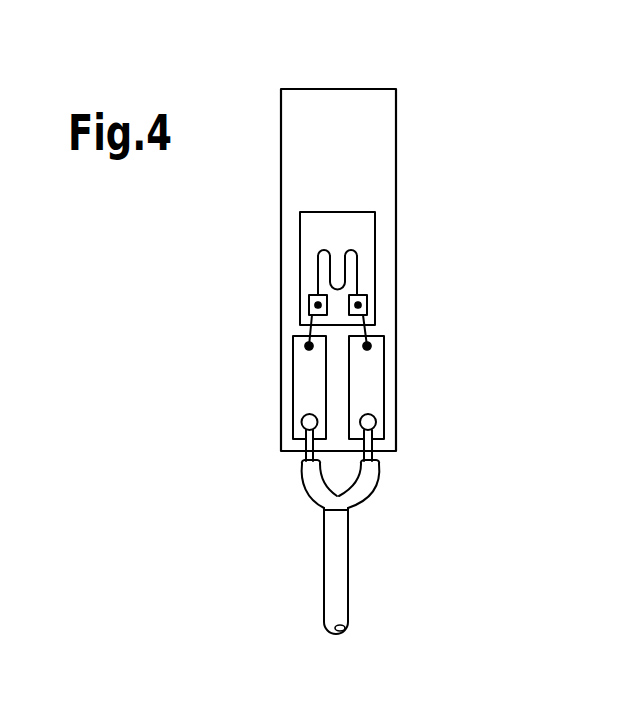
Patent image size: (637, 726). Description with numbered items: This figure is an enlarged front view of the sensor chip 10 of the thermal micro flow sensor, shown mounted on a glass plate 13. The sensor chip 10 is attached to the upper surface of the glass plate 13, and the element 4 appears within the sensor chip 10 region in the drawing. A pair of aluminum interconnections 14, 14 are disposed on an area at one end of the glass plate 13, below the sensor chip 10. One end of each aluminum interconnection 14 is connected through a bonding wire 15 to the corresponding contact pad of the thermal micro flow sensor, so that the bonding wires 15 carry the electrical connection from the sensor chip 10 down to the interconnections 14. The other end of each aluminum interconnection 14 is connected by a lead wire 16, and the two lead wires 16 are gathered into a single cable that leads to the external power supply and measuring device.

The sensor chip 10 is at (419, 128).
The glass plate 13 is at (310, 102).
The heating element 4 is at (357, 250).
The bonding wire 15 is at (305, 328).
The aluminum interconnection 14 is at (300, 392).
The lead wire 16 is at (340, 501).